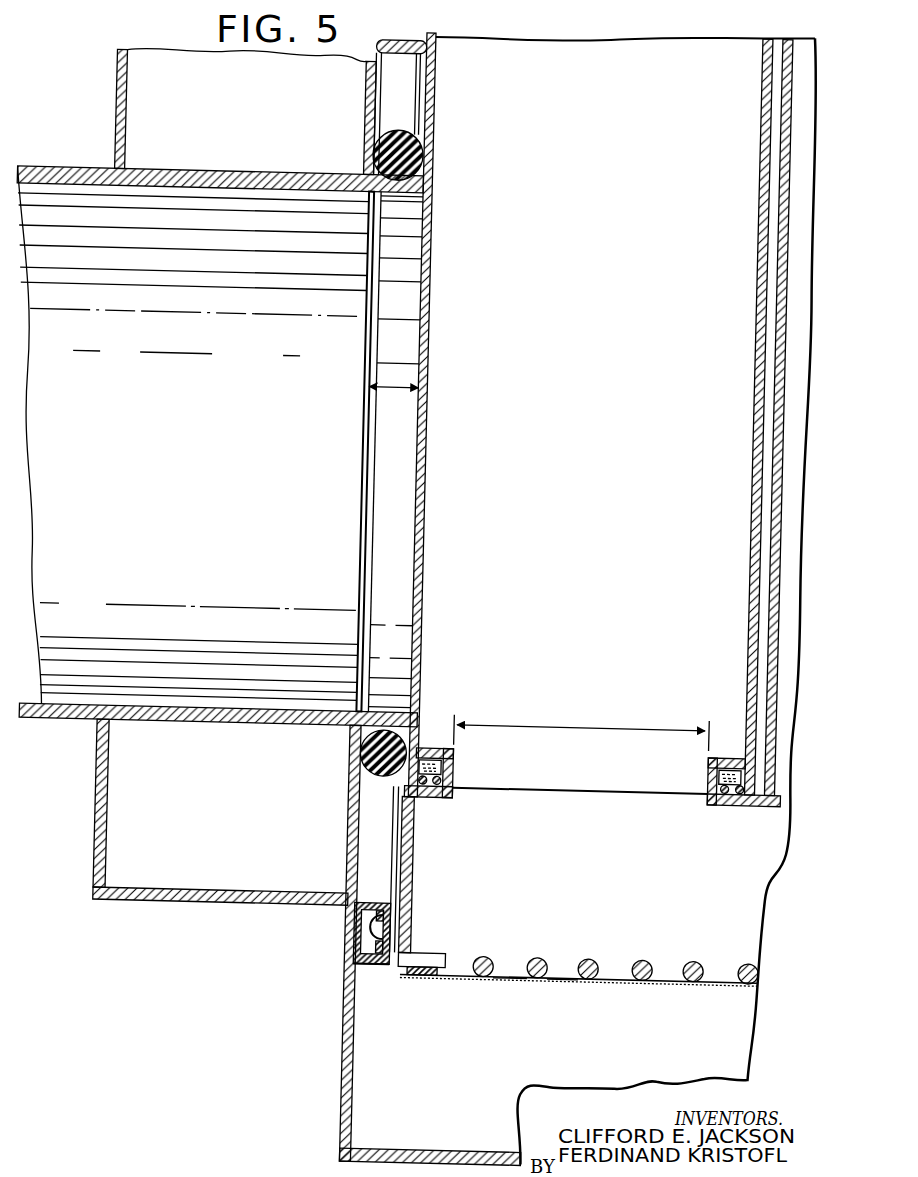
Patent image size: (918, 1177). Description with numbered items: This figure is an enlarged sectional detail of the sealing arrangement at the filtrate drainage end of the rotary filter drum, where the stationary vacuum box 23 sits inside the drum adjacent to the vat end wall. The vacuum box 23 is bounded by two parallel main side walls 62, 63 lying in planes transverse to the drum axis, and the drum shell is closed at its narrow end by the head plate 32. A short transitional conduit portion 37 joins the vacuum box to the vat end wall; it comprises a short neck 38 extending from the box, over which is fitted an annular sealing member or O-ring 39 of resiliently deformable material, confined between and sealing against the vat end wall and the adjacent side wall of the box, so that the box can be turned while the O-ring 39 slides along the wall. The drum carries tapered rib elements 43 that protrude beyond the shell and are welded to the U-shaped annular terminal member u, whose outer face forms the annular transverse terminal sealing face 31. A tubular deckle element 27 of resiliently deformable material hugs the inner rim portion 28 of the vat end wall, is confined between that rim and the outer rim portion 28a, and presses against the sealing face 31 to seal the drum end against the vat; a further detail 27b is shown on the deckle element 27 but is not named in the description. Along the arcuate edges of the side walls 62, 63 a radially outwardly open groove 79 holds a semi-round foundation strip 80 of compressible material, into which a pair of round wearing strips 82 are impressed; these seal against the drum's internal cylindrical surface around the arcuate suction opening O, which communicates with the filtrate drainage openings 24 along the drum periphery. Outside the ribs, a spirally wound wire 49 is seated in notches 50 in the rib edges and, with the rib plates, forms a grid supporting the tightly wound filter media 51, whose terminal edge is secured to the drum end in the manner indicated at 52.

The vacuum box 23 is at (493, 61).
The main side wall 62 is at (433, 110).
The annular sealing member 39 is at (418, 152).
The short neck 38 is at (409, 191).
The transitional conduit portion 37 is at (410, 384).
The main side wall 63 is at (766, 154).
The head plate 32 is at (789, 307).
The rib elements 43 is at (786, 907).
The groove 79 is at (448, 750).
The foundation strip 80 is at (456, 760).
The wearing strips 82 is at (759, 821).
The arcuate suction opening O is at (582, 732).
The filtrate drainage openings 24 is at (543, 785).
The annular transverse terminal sealing face 31 is at (431, 831).
The inner rim portion 28 is at (408, 894).
The deckle element 27 is at (406, 966).
The seal element 27b is at (340, 931).
The outer rim portion 28a is at (410, 969).
The annular terminal member u is at (438, 948).
The filter media securing 52 is at (443, 970).
The filter media 51 is at (703, 979).
The wire 49 is at (500, 957).
The notches 50 is at (535, 996).